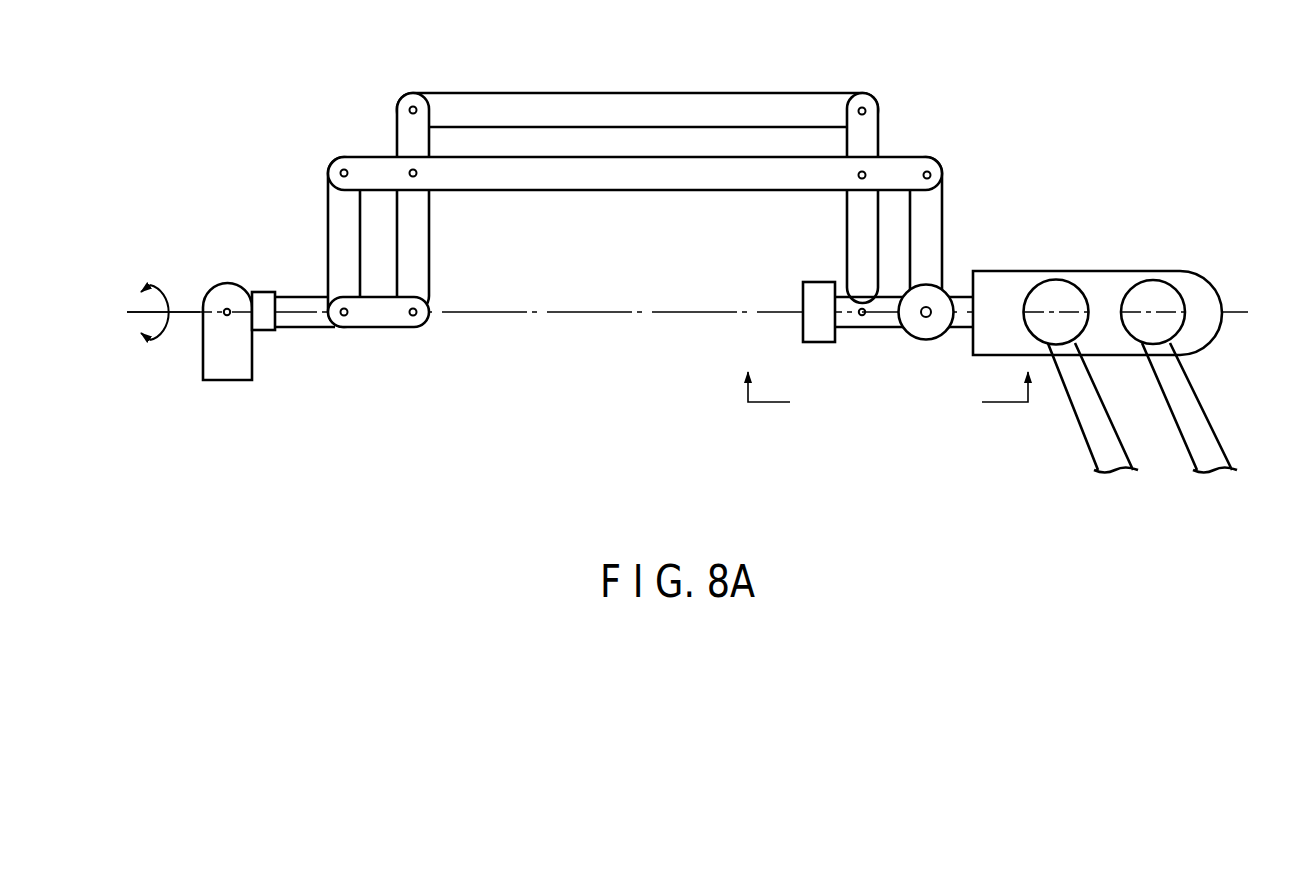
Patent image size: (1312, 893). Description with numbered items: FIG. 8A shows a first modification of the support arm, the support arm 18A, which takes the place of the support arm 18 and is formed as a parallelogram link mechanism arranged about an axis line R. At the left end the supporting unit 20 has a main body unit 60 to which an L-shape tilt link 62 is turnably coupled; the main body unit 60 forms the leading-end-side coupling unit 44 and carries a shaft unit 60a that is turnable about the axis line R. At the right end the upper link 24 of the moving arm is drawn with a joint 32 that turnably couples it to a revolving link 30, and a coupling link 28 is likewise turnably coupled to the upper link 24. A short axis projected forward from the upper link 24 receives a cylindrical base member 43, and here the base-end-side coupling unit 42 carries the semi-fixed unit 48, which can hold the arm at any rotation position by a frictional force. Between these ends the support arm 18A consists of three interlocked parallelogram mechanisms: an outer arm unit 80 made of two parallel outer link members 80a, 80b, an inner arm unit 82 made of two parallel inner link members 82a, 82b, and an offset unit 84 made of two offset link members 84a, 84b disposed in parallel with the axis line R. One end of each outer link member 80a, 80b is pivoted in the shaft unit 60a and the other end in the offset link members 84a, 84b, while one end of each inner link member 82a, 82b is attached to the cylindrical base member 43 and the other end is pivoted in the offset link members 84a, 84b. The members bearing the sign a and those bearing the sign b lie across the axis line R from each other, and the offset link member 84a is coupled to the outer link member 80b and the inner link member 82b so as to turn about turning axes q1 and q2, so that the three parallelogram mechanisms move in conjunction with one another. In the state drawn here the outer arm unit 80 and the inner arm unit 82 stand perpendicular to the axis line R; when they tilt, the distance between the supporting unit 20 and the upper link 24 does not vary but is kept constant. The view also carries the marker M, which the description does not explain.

The support arm 18A is at (922, 83).
The support arm 18 is at (622, 348).
The axis line R is at (518, 313).
The supporting unit 20 is at (232, 405).
The L-shape tilt link 62 is at (210, 359).
The main body unit 60 is at (263, 292).
The shaft unit 60a is at (305, 328).
The leading-end-side coupling unit 44 is at (375, 358).
The offset unit 84 is at (611, 80).
The offset link member 84a is at (623, 191).
The offset link member 84b is at (709, 93).
The outer arm unit 80 is at (443, 259).
The outer link member 80a is at (338, 222).
The outer link member 80b is at (405, 139).
The inner arm unit 82 is at (818, 213).
The inner link member 82a is at (936, 228).
The inner link member 82b is at (857, 243).
The turning axis q1 is at (418, 176).
The turning axis q2 is at (866, 174).
The semi-fixed unit 48 is at (792, 278).
The cylindrical base member 43 is at (882, 330).
The base-end-side coupling unit 42 is at (932, 375).
The upper link 24 is at (1212, 292).
The joint 32 is at (1053, 288).
The coupling link 28 is at (1210, 435).
The revolving link 30 is at (1100, 448).
The viewing direction M is at (890, 392).